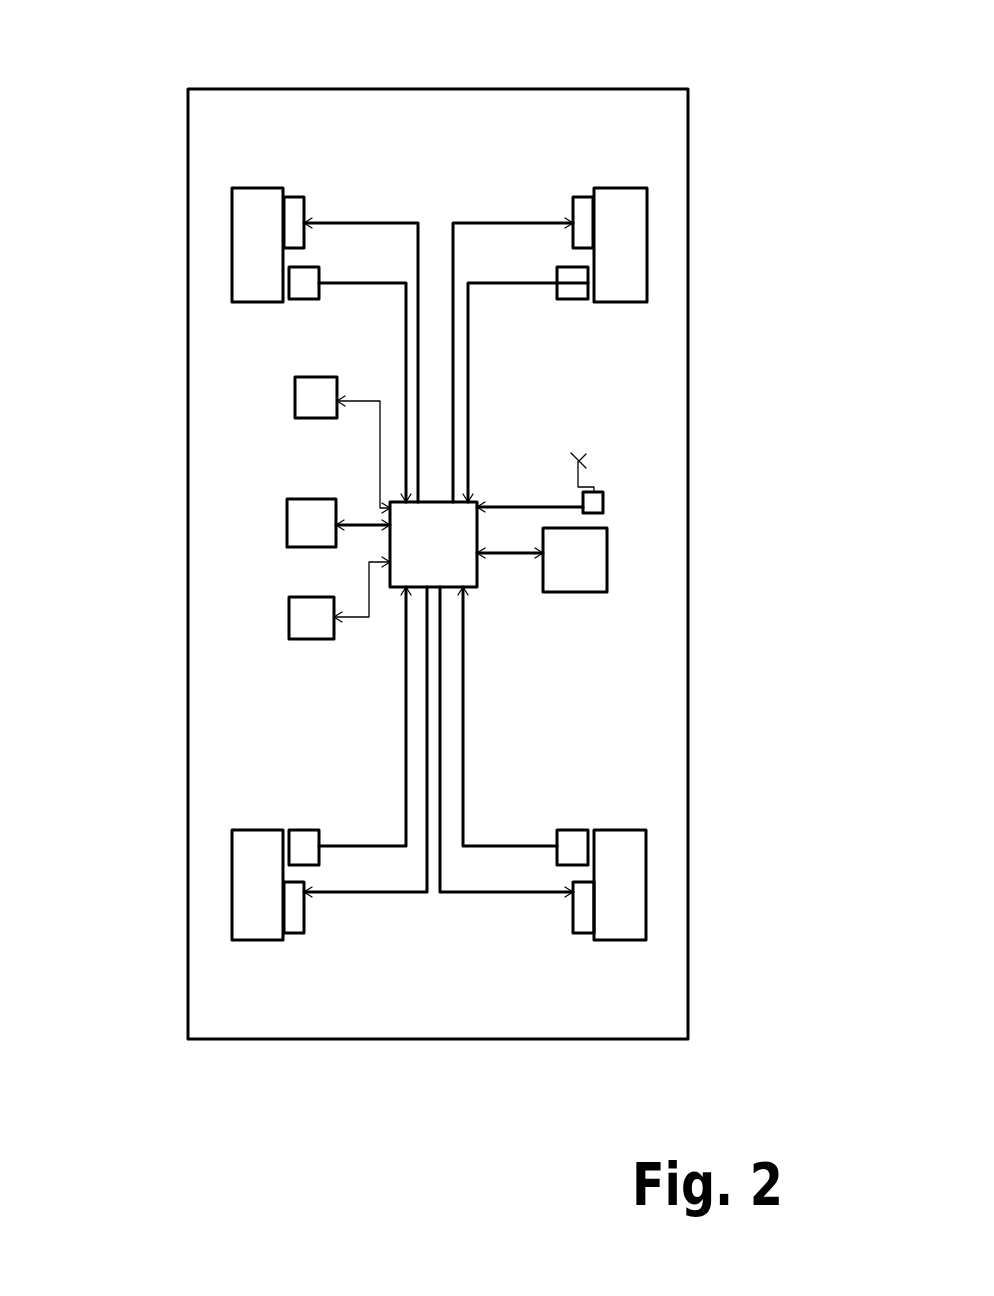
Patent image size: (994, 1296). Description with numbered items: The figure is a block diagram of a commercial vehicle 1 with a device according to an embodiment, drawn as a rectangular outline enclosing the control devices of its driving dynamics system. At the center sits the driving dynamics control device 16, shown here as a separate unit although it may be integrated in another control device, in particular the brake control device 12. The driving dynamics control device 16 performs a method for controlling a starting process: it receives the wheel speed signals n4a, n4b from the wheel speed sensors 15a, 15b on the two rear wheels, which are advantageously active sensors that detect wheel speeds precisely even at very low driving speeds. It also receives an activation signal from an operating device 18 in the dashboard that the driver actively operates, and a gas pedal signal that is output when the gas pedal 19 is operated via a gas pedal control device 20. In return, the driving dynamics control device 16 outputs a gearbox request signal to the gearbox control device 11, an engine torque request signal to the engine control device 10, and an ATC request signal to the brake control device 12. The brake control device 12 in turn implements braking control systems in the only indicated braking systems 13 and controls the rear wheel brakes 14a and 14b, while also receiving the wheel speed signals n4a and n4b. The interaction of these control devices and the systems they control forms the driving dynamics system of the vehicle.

The commercial vehicle 1 is at (765, 100).
The engine control device 10 is at (287, 528).
The gearbox control device 11 is at (607, 553).
The brake control device 12 is at (295, 400).
The braking systems 13 is at (294, 204).
The rear wheel brake 14a is at (280, 942).
The rear wheel brake 14b is at (588, 938).
The wheel speed sensor 15a is at (305, 848).
The wheel speed sensor 15b is at (572, 848).
The driving dynamics control device 16 is at (477, 568).
The operating device 18 is at (289, 617).
The gas pedal 19 is at (582, 462).
The gas pedal control device 20 is at (597, 500).
The wheel speed signal n4a is at (406, 718).
The wheel speed signal n4b is at (463, 718).